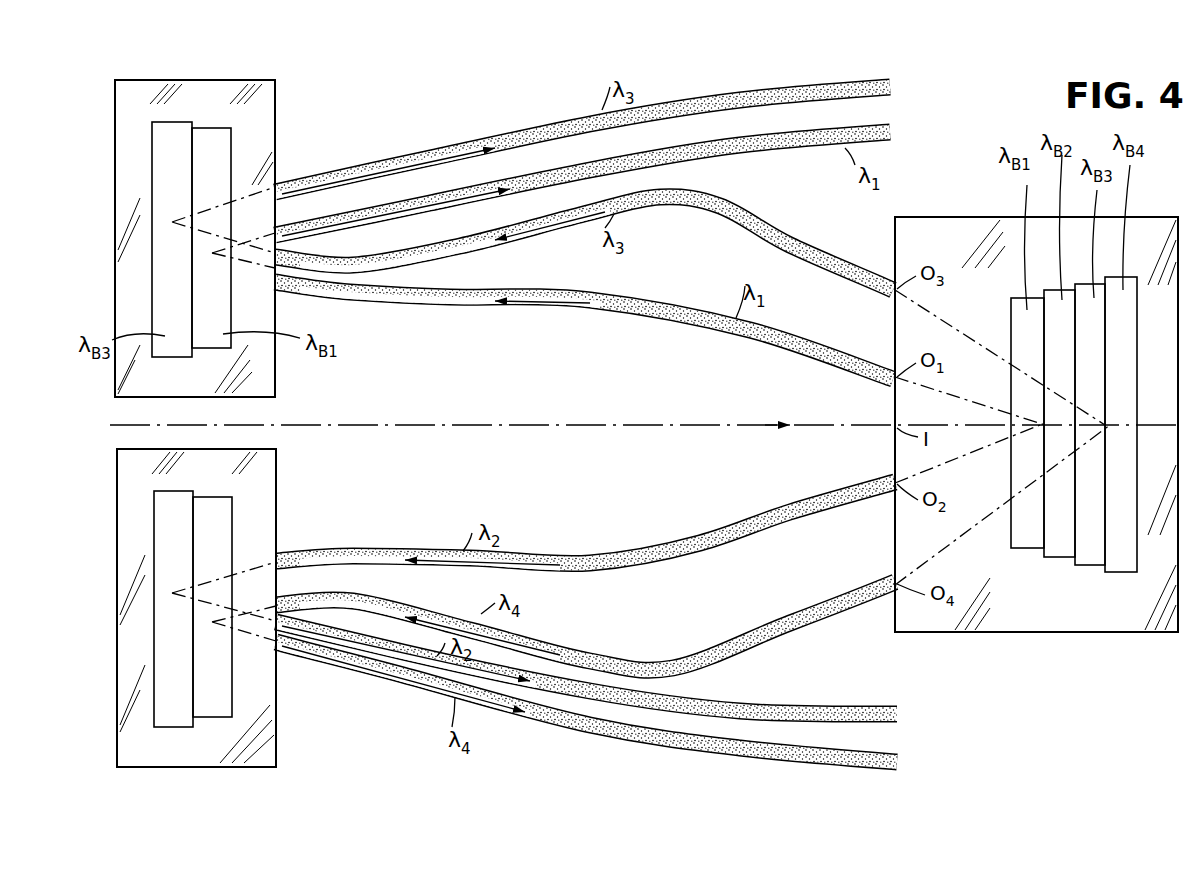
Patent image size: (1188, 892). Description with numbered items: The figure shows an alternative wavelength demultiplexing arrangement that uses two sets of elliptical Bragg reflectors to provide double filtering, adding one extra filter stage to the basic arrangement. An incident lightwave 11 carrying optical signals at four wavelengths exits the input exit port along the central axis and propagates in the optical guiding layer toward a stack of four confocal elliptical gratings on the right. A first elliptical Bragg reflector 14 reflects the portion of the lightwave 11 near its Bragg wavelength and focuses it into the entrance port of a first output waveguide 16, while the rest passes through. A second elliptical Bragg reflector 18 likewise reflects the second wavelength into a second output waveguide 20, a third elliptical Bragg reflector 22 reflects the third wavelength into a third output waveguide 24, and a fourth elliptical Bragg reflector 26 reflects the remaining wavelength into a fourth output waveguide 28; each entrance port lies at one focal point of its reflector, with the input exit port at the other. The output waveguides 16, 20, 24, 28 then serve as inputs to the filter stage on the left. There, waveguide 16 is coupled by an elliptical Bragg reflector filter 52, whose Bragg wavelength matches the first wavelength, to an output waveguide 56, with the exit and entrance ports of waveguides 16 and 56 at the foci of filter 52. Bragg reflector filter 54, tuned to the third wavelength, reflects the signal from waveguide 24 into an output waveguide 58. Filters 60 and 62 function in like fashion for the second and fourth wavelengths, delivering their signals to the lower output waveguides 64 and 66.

The incident lightwave 11 is at (718, 428).
The first elliptical Bragg reflector 14 is at (1027, 540).
The first output waveguide 16 is at (620, 294).
The second elliptical Bragg reflector 18 is at (1060, 548).
The second output waveguide 20 is at (625, 552).
The third elliptical Bragg reflector 22 is at (1093, 553).
The third output waveguide 24 is at (764, 218).
The fourth elliptical Bragg reflector 26 is at (1125, 558).
The fourth output waveguide 28 is at (640, 655).
The elliptical Bragg reflector filter 52 is at (215, 150).
The Bragg reflector filter 54 is at (165, 143).
The output waveguide 56 is at (591, 173).
The output waveguide 58 is at (404, 157).
The filter 60 is at (218, 518).
The filter 62 is at (168, 515).
The optical fiber 64 is at (830, 705).
The optical fiber 66 is at (810, 766).